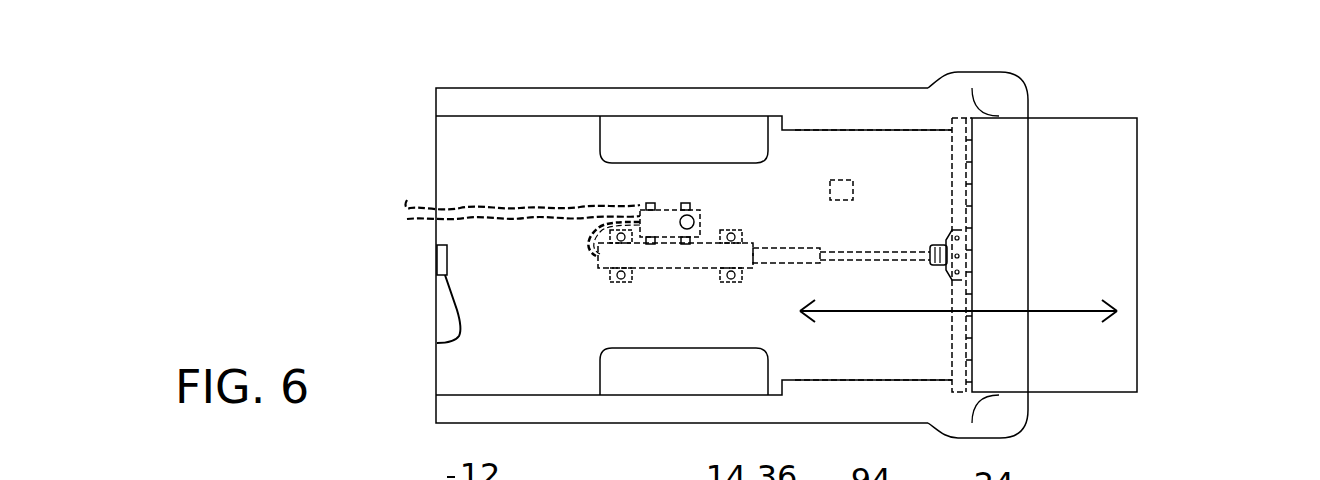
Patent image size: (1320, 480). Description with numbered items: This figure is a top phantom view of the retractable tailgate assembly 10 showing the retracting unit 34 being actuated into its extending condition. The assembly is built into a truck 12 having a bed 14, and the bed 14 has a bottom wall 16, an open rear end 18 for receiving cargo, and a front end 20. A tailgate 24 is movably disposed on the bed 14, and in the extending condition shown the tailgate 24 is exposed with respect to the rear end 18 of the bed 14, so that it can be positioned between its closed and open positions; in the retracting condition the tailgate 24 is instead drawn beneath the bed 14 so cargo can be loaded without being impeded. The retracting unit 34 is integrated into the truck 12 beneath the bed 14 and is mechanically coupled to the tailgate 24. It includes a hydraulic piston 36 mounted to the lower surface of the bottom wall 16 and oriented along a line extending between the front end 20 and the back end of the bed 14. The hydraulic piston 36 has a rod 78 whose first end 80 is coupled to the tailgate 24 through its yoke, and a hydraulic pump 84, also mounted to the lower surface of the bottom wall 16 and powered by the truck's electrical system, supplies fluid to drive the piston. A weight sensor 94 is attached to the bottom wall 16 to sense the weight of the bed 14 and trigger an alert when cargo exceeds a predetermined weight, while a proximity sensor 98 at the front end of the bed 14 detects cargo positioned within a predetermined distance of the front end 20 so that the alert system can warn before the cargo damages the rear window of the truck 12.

The retractable tailgate assembly 10 is at (1208, 157).
The truck 12 is at (499, 88).
The bed 14 is at (655, 93).
The bottom wall 16 is at (885, 147).
The rear end 18 is at (998, 100).
The front end 20 is at (436, 149).
The tailgate 24 is at (1122, 118).
The retracting unit 34 is at (623, 203).
The hydraulic piston 36 is at (777, 247).
The rod 78 is at (902, 250).
The first end 80 is at (932, 265).
The hydraulic pump 84 is at (668, 268).
The weight sensor 94 is at (837, 180).
The proximity sensor 98 is at (437, 343).